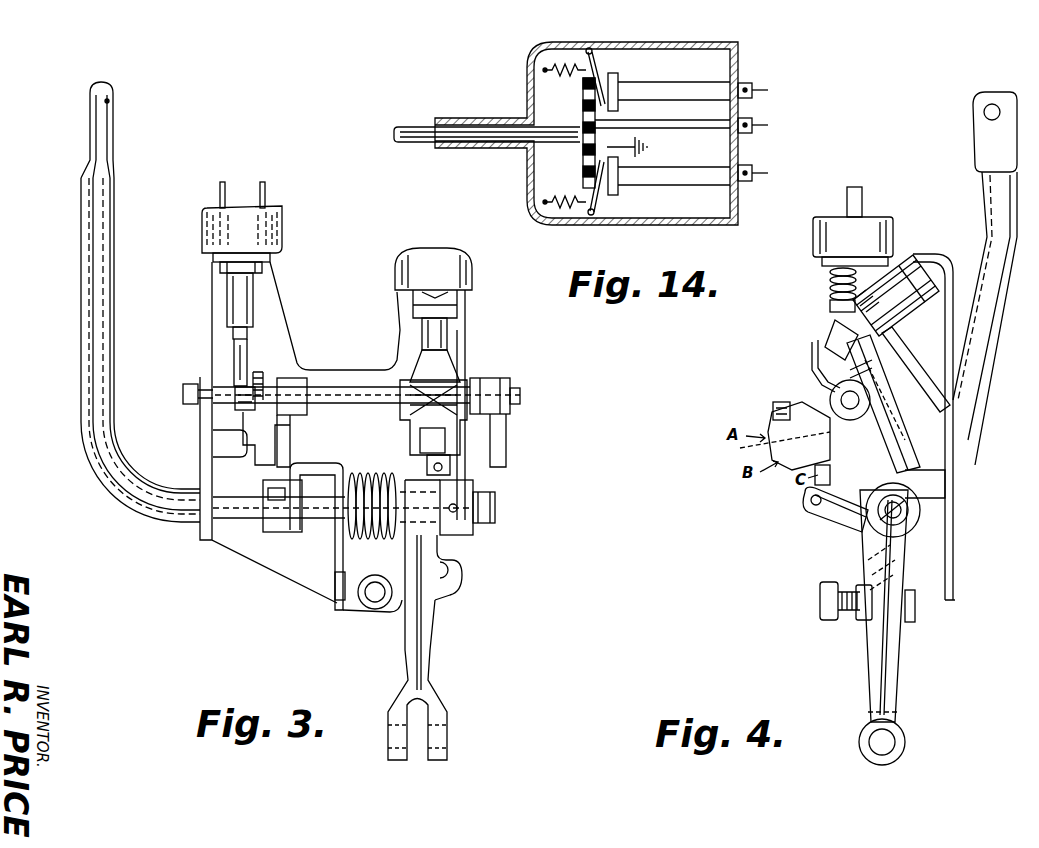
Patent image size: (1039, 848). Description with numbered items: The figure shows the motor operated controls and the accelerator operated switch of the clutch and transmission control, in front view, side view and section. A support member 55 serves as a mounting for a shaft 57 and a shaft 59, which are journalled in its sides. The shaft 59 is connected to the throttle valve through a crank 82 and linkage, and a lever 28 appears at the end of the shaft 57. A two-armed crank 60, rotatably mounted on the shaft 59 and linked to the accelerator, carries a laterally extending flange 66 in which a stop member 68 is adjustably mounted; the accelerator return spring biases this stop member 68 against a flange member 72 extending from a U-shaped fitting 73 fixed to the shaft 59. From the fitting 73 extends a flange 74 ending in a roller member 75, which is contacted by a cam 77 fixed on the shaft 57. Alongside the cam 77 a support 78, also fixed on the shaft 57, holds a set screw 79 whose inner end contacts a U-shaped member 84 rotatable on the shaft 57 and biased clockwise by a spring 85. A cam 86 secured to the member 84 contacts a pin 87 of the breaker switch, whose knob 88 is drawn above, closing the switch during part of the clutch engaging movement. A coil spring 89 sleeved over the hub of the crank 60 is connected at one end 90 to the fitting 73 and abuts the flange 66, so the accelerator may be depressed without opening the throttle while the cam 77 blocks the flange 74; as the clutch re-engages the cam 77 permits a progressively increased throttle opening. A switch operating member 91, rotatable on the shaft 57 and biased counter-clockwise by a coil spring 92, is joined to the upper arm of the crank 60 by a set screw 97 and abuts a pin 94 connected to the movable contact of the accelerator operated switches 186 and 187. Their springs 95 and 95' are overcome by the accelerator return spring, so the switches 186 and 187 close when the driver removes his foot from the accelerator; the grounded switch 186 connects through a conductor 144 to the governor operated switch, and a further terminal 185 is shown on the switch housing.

In FIG. 3, the lever arm 28 is at (505, 445).
In FIG. 4, the lever arm 28 is at (880, 435).
In FIG. 3, the support member 55 is at (235, 556).
In FIG. 4, the support member 55 is at (955, 500).
In FIG. 3, the shaft 57 is at (333, 388).
In FIG. 4, the shaft 57 is at (840, 398).
In FIG. 3, the shaft 59 is at (494, 500).
In FIG. 4, the shaft 59 is at (880, 518).
In FIG. 3, the two-armed crank 60 is at (430, 645).
In FIG. 4, the two-armed crank 60 is at (890, 675).
In FIG. 3, the laterally extending flange 66 is at (392, 614).
In FIG. 3, the stop member 68 is at (362, 600).
In FIG. 4, the stop member 68 is at (842, 620).
In FIG. 4, the flange member 72 is at (914, 622).
In FIG. 3, the U-shaped fitting 73 is at (305, 466).
In FIG. 4, the U-shaped fitting 73 is at (915, 485).
In FIG. 3, the flange 74 is at (300, 520).
In FIG. 4, the flange 74 is at (838, 522).
In FIG. 3, the roller member 75 is at (265, 523).
In FIG. 4, the roller member 75 is at (812, 502).
In FIG. 3, the cam 77 is at (285, 450).
In FIG. 4, the cam 77 is at (770, 430).
In FIG. 3, the support 78 is at (270, 455).
In FIG. 3, the set screw 79 is at (240, 405).
In FIG. 4, the set screw 79 is at (773, 408).
In FIG. 3, the crank 82 is at (92, 232).
In FIG. 4, the crank 82 is at (988, 194).
In FIG. 3, the U-shaped member 84 is at (222, 448).
In FIG. 4, the U-shaped member 84 is at (752, 450).
In FIG. 3, the spring 85 is at (262, 385).
In FIG. 4, the spring 85 is at (862, 368).
In FIG. 3, the cam 86 is at (232, 367).
In FIG. 4, the cam 86 is at (892, 355).
In FIG. 3, the pin 87 is at (253, 332).
In FIG. 3, the knob 88 is at (268, 218).
In FIG. 4, the knob 88 is at (875, 230).
In FIG. 3, the coil spring 89 is at (355, 475).
In FIG. 4, the coil spring 89 is at (870, 565).
In FIG. 3, the end of spring 90 is at (337, 588).
In FIG. 3, the switch operating member 91 is at (448, 367).
In FIG. 4, the switch operating member 91 is at (818, 372).
In FIG. 3, the coil spring 92 is at (458, 378).
In FIG. 4, the coil spring 92 is at (882, 403).
In FIG. 3, the pin 94 is at (448, 345).
In FIG. 4, the pin 94 is at (810, 352).
In FIG. 14, the spring 95 is at (535, 57).
In FIG. 14, the spring 95' is at (568, 224).
In FIG. 3, the set screw 97 is at (445, 468).
In FIG. 4, the set screw 97 is at (815, 480).
In FIG. 14, the conductor 144 is at (770, 175).
In FIG. 14, the terminal 185 is at (780, 90).
In FIG. 3, the accelerator operated switch 186 is at (455, 262).
In FIG. 14, the accelerator operated switch 186 is at (587, 165).
In FIG. 4, the accelerator operated switch 186 is at (893, 262).
In FIG. 3, the accelerator operated switch 187 is at (408, 263).
In FIG. 14, the accelerator operated switch 187 is at (585, 107).
In FIG. 4, the accelerator operated switch 187 is at (832, 290).